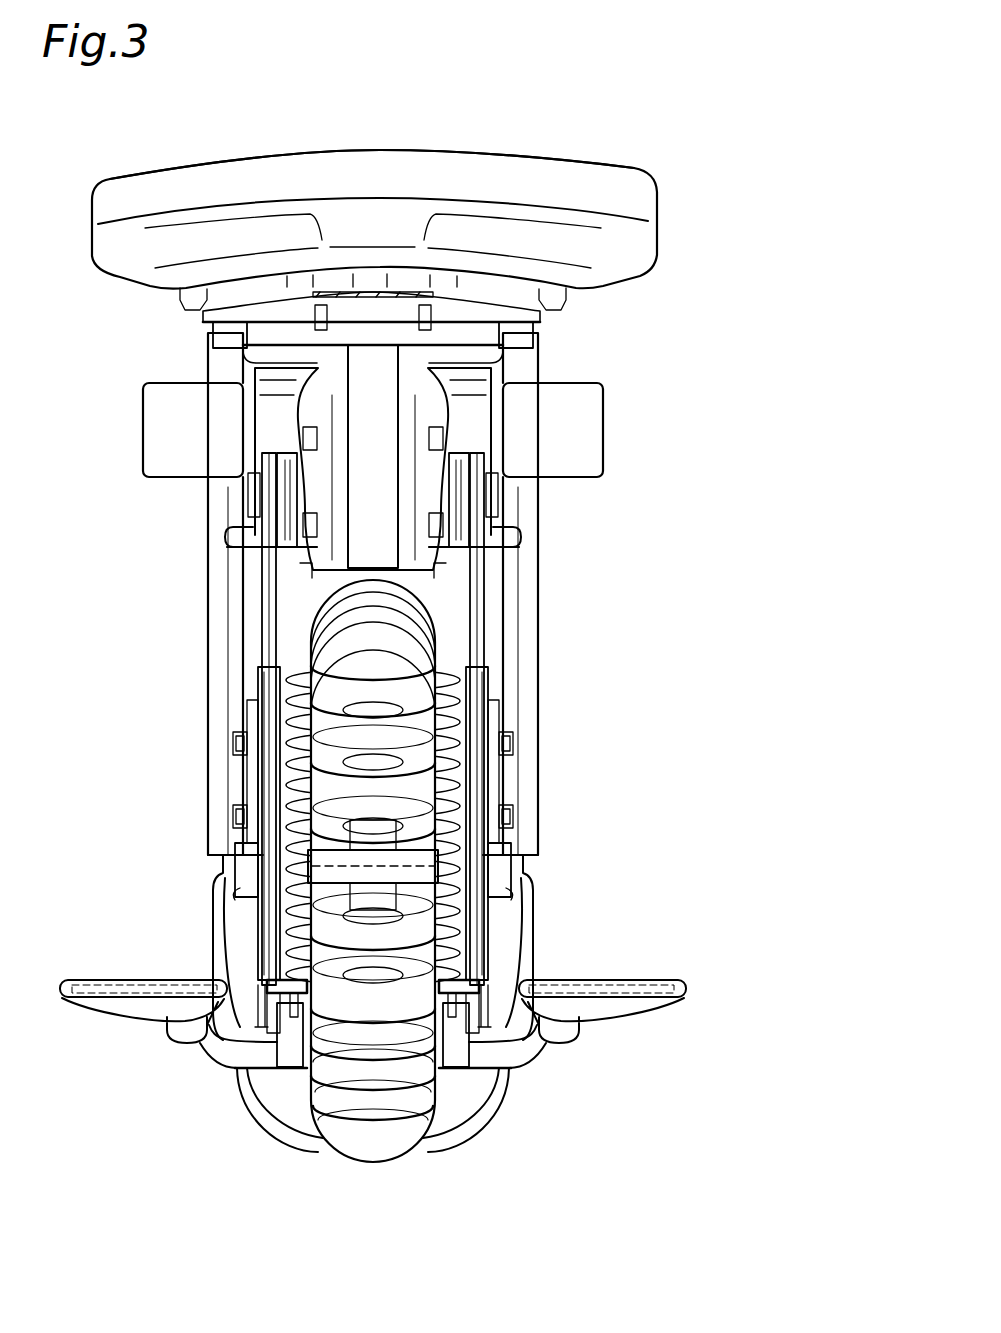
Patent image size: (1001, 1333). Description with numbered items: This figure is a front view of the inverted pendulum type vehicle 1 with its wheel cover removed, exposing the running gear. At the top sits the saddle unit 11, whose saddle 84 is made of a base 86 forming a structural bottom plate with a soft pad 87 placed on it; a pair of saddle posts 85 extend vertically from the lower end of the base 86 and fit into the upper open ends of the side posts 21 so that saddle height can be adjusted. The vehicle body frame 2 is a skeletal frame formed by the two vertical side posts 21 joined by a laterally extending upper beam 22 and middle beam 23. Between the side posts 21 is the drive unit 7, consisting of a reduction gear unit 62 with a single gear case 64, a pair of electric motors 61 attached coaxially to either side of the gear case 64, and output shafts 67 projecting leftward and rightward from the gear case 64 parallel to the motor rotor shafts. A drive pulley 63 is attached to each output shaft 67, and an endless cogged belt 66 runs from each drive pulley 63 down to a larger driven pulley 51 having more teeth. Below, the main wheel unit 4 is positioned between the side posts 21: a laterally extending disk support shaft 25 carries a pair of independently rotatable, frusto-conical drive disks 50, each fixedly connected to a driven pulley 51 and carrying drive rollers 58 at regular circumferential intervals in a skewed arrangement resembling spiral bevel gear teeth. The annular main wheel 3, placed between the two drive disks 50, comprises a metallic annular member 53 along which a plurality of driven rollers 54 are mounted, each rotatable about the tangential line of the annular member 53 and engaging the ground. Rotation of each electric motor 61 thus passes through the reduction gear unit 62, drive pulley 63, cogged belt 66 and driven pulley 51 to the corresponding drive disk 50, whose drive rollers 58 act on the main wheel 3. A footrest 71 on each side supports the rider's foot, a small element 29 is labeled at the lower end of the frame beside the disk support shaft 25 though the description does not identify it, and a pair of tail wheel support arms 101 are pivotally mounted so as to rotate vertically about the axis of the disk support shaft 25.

The inverted pendulum type vehicle 1 is at (577, 55).
The vehicle body frame 2 is at (542, 593).
The main wheel 3 is at (385, 1163).
The main wheel unit 4 is at (421, 1161).
The drive unit 7 is at (608, 397).
The saddle unit 11 is at (672, 172).
The side post 21 is at (213, 557).
The upper beam 22 is at (492, 352).
The middle beam 23 is at (502, 540).
The disk support shaft 25 is at (440, 836).
The lower bracket 29 is at (515, 893).
The drive disk 50 is at (300, 773).
The driven pulley 51 is at (256, 691).
The annular member 53 is at (345, 835).
The driven roller 54 is at (363, 1120).
The drive roller 58 is at (240, 790).
The electric motor 61 is at (147, 446).
The reduction gear unit 62 is at (456, 410).
The drive pulley 63 is at (255, 500).
The gear case 64 is at (360, 417).
The cogged belt 66 is at (268, 625).
The output shaft 67 is at (296, 475).
The footrest 71 is at (165, 993).
The saddle 84 is at (567, 161).
The saddle post 85 is at (213, 320).
The base 86 is at (513, 290).
The soft pad 87 is at (485, 175).
The tail wheel support arm 101 is at (222, 925).